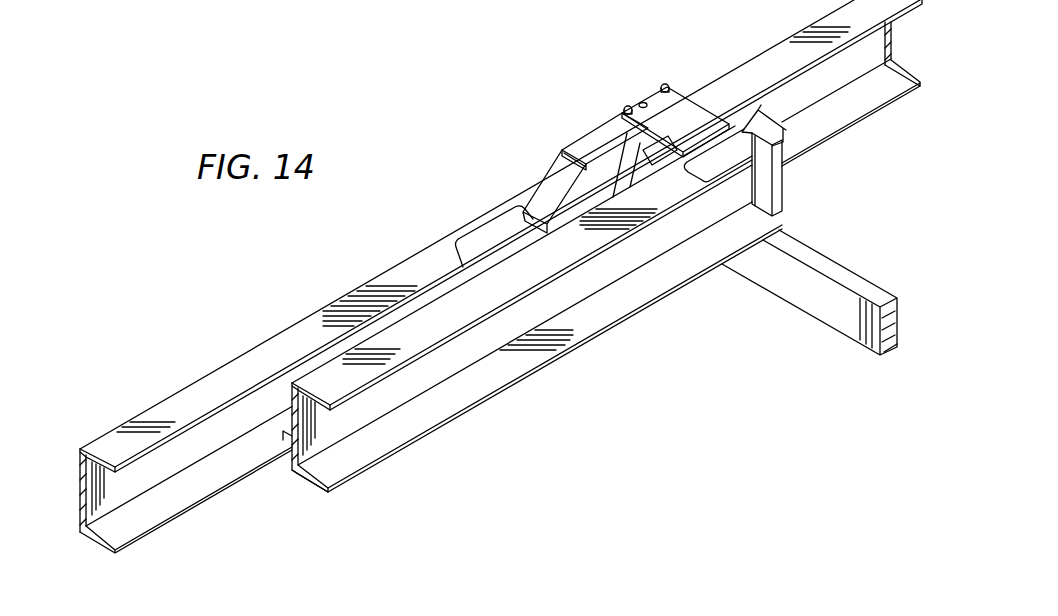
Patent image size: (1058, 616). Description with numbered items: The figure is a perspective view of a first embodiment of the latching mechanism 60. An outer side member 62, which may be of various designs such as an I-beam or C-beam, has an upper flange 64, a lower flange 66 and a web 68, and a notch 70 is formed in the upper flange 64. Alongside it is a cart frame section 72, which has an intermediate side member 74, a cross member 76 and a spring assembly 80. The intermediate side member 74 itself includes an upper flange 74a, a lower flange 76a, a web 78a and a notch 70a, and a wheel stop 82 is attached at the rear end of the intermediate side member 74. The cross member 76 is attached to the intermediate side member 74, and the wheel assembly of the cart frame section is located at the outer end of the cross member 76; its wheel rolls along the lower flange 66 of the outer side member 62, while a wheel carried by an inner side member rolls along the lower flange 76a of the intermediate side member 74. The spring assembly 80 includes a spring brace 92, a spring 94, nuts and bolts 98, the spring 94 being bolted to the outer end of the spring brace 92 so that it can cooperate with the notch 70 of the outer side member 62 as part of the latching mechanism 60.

The latching mechanism 60 is at (552, 62).
The outer side member 62 is at (186, 385).
The upper flange 64 is at (108, 465).
The lower flange 66 is at (105, 552).
The web 68 is at (78, 512).
The notch 70 is at (493, 216).
The notch 70a is at (745, 132).
The cart frame section 72 is at (640, 280).
The intermediate side member 74 is at (402, 432).
The upper flange 74a is at (318, 396).
The cross member 76 is at (822, 305).
The lower flange 76a is at (318, 474).
The web 78a is at (285, 438).
The spring assembly 80 is at (610, 92).
The wheel stop 82 is at (790, 200).
The spring brace 92 is at (694, 108).
The spring 94 is at (592, 138).
The bolts 98 is at (630, 105).